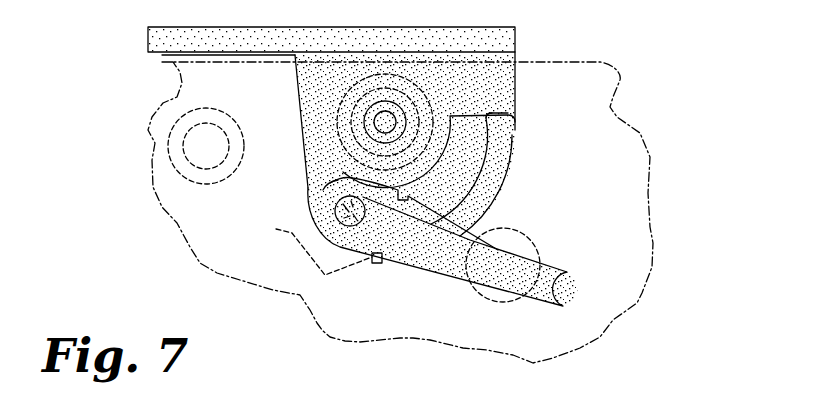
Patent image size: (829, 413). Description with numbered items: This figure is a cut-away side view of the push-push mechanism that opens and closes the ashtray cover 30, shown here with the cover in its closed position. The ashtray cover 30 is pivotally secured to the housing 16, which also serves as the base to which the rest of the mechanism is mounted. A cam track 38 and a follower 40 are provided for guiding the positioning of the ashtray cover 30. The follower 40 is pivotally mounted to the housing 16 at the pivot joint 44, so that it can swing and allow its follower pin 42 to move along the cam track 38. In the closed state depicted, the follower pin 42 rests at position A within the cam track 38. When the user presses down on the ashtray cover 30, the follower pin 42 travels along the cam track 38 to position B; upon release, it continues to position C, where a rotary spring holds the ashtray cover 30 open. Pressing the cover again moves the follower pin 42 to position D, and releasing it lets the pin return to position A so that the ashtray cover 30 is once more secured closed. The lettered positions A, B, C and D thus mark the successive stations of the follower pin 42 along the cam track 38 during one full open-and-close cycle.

The housing 16 is at (640, 244).
The ashtray cover 30 is at (180, 40).
The cam track 38 is at (482, 175).
The follower 40 is at (433, 247).
The follower pin 42 is at (338, 247).
The pivot joint 44 is at (503, 302).
The position A is at (358, 252).
The position B is at (333, 181).
The position C is at (489, 128).
The position D is at (333, 204).